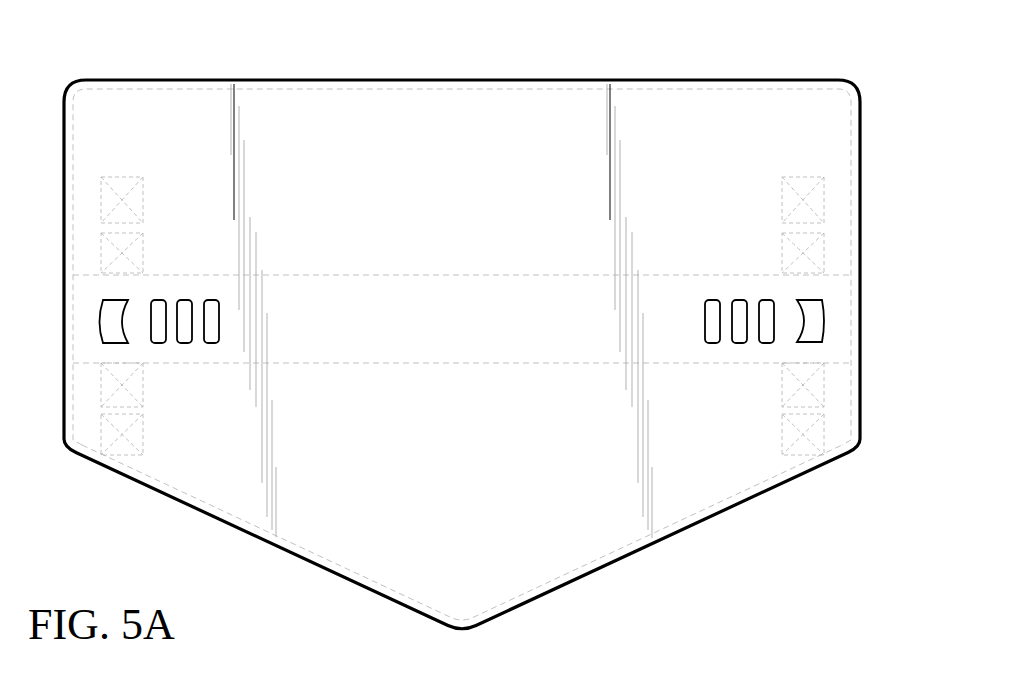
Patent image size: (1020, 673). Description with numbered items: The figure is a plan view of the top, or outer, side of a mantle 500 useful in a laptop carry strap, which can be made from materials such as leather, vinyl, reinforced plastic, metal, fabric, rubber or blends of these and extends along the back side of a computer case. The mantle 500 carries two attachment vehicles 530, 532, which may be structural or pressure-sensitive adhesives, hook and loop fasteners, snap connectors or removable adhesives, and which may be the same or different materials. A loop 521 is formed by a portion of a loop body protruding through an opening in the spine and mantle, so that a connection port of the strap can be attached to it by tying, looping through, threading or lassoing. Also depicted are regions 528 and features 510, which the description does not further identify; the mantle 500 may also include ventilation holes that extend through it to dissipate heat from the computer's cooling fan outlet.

The mantle 500 is at (138, 66).
The attachment vehicle 530 is at (653, 123).
The attachment vehicle 532 is at (602, 520).
The attachment region 528 is at (824, 204).
The loop 521 is at (100, 333).
The slots 510 is at (765, 341).